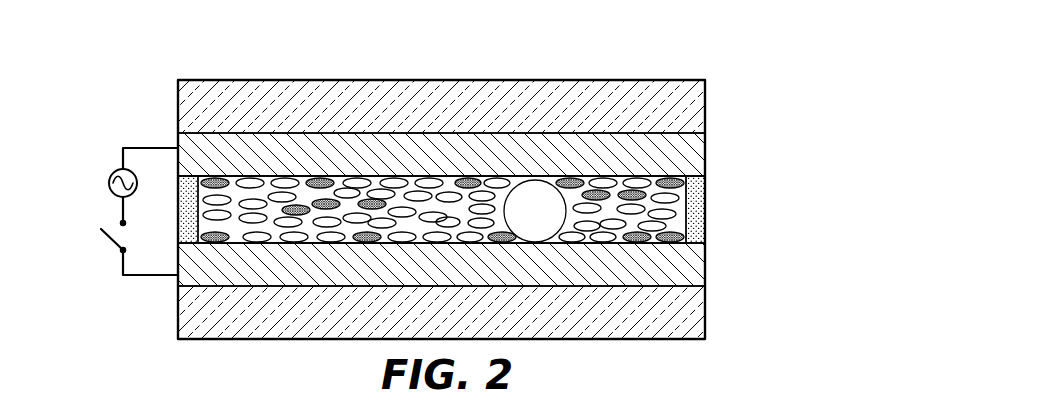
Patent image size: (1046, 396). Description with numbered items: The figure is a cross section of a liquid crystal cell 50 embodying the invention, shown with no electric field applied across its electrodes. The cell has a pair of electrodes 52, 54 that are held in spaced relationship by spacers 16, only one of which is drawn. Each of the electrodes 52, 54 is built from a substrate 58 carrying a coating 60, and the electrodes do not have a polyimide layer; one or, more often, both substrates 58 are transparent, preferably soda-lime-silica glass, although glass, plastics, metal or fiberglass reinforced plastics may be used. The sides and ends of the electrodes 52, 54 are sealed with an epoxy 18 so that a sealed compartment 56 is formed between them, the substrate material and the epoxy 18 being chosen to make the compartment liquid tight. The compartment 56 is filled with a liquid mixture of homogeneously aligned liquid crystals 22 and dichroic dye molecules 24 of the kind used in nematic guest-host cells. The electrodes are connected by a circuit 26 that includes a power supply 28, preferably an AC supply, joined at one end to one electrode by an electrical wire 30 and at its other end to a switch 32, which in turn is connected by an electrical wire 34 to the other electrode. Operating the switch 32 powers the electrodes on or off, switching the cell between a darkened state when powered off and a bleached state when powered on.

The spacer 16 is at (527, 200).
The epoxy 18 is at (178, 212).
The liquid crystals 22 is at (428, 180).
The dichroic dye molecules 24 is at (320, 180).
The circuit 26 is at (105, 187).
The power supply 28 is at (108, 183).
The electrical wire 30 is at (140, 147).
The switch 32 is at (100, 243).
The electrical wire 34 is at (140, 278).
The liquid crystal cell 50 is at (802, 148).
The electrode 52 is at (664, 75).
The electrode 54 is at (677, 354).
The sealed compartment 56 is at (690, 229).
The substrate 58 is at (698, 110).
The coating 60 is at (698, 156).